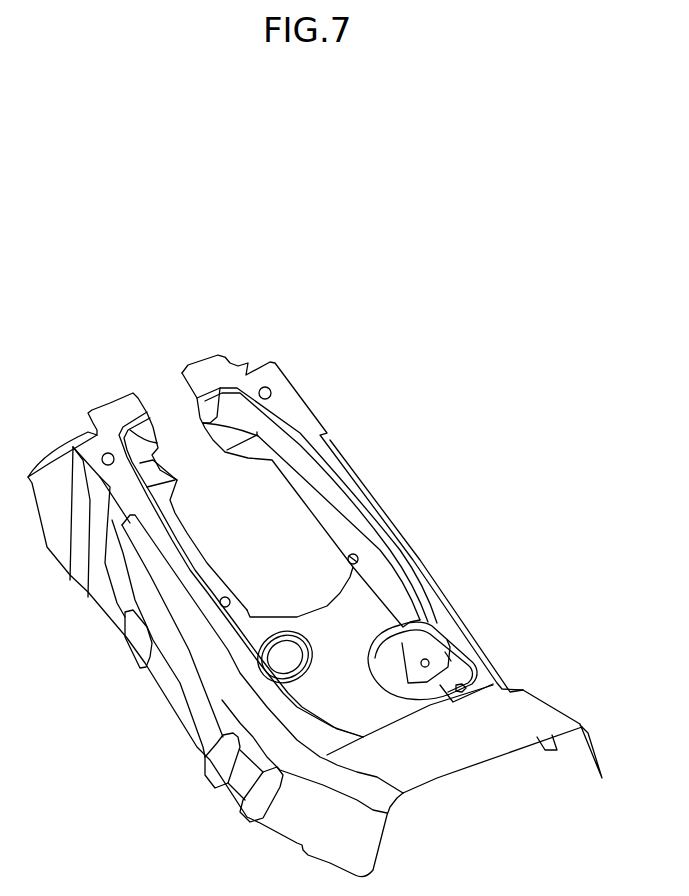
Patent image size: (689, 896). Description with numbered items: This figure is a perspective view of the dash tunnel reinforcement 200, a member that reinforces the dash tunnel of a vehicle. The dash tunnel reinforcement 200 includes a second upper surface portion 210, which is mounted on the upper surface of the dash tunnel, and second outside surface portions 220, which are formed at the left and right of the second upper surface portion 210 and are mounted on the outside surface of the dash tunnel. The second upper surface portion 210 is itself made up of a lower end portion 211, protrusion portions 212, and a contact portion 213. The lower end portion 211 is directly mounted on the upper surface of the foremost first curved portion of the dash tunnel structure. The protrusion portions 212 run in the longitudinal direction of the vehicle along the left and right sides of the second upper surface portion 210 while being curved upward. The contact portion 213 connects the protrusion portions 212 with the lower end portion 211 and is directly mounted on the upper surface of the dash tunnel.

The dash tunnel reinforcement 200 is at (150, 238).
The second upper surface portion 210 is at (305, 298).
The lower end portion 211 is at (412, 747).
The protrusion portions 212 is at (346, 483).
The contact portion 213 is at (338, 630).
The second outside surface portions 220 is at (105, 563).